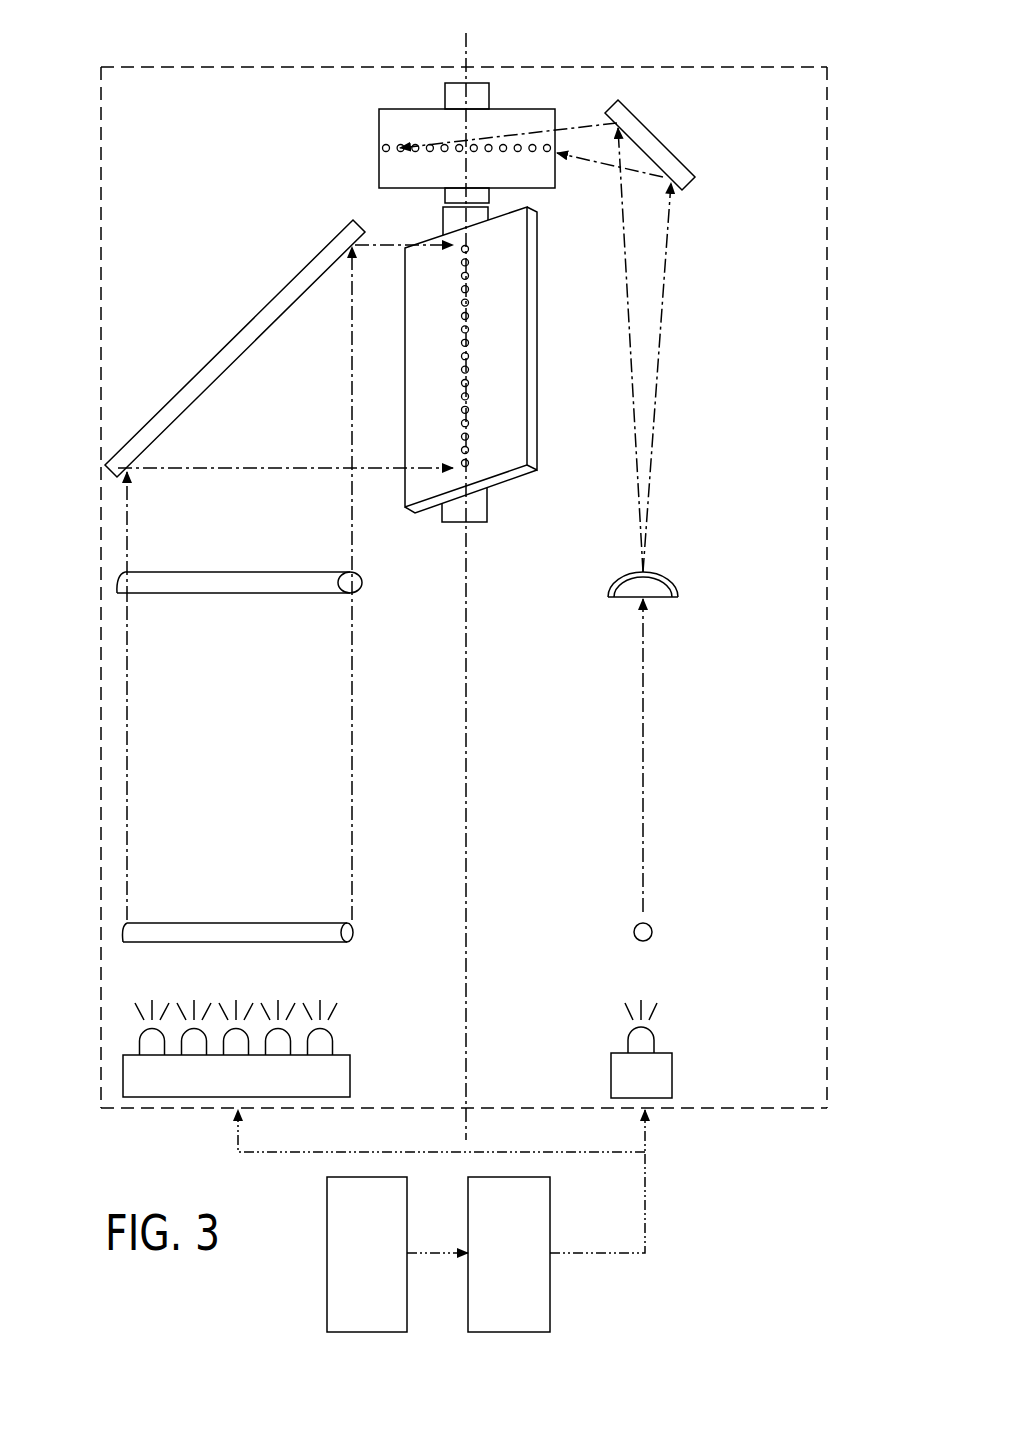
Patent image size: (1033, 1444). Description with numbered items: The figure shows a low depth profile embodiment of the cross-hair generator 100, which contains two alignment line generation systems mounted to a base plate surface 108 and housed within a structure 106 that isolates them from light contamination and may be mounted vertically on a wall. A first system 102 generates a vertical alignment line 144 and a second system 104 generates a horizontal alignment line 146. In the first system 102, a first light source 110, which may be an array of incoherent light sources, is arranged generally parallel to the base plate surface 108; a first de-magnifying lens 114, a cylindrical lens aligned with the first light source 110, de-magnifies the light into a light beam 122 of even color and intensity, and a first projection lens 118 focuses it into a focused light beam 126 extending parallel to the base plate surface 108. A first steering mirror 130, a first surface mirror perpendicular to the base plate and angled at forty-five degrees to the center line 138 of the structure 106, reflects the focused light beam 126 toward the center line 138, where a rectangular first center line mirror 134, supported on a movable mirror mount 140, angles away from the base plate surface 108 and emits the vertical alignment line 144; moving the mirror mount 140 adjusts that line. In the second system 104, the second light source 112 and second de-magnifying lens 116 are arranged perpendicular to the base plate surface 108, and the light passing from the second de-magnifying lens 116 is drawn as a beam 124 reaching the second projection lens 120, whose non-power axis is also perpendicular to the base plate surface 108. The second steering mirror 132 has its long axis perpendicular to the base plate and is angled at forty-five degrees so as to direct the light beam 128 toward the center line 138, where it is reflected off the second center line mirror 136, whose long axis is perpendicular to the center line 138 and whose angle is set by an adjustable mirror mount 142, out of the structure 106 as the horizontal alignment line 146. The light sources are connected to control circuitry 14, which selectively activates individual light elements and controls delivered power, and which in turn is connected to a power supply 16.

The cross-hair generator 100 is at (761, 32).
The first system 102 is at (86, 654).
The second system 104 is at (781, 506).
The structure 106 is at (310, 67).
The base plate surface 108 is at (435, 818).
The first light source 110 is at (247, 1075).
The second light source 112 is at (672, 1078).
The first de-magnifying lens 114 is at (148, 942).
The second de-magnifying lens 116 is at (652, 929).
The first projection lens 118 is at (190, 595).
The second projection lens 120 is at (668, 580).
The light beam 122 is at (135, 765).
The light beam 124 is at (645, 735).
The focused light beam 126 is at (158, 518).
The light beam 128 is at (650, 328).
The first steering mirror 130 is at (218, 352).
The second steering mirror 132 is at (655, 128).
The first center line mirror 134 is at (513, 315).
The second center line mirror 136 is at (379, 135).
The center line 138 is at (468, 52).
The mirror mount 140 is at (488, 510).
The mirror mount 142 is at (445, 97).
The vertical alignment line 144 is at (470, 370).
The horizontal alignment line 146 is at (505, 146).
The control circuitry 14 is at (550, 1315).
The power supply 16 is at (327, 1300).